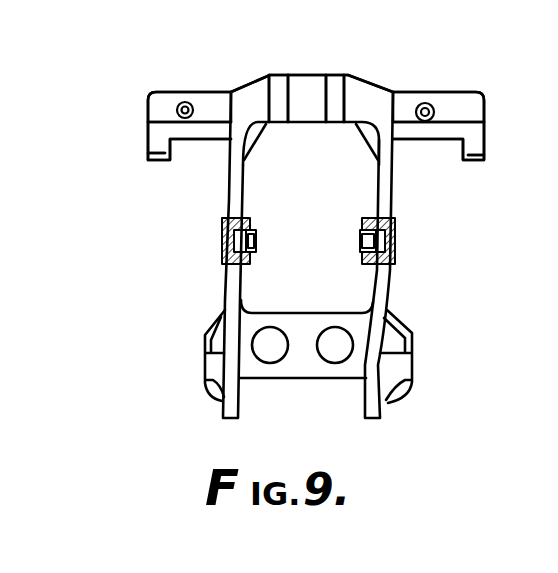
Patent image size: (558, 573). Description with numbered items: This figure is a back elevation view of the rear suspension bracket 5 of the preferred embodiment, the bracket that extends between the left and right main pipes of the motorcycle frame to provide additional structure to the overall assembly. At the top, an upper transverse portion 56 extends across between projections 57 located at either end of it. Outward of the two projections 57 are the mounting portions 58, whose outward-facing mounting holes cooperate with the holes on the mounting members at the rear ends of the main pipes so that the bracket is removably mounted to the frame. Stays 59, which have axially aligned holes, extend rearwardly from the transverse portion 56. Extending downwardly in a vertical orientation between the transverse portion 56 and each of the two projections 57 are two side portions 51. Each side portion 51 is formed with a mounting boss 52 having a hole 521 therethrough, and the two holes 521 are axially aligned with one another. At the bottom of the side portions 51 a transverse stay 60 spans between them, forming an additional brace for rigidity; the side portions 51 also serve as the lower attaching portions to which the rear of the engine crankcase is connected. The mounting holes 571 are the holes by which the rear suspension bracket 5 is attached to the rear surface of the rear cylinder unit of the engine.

The rear suspension bracket 5 is at (313, 250).
The side portions 51 is at (229, 193).
The mounting boss 52 is at (251, 226).
The hole 521 is at (223, 240).
The upper transverse portion 56 is at (368, 93).
The projections 57 is at (210, 105).
The mounting holes 571 is at (178, 106).
The mounting portions 58 is at (153, 138).
The stays 59 is at (281, 85).
The transverse stay 60 is at (300, 363).